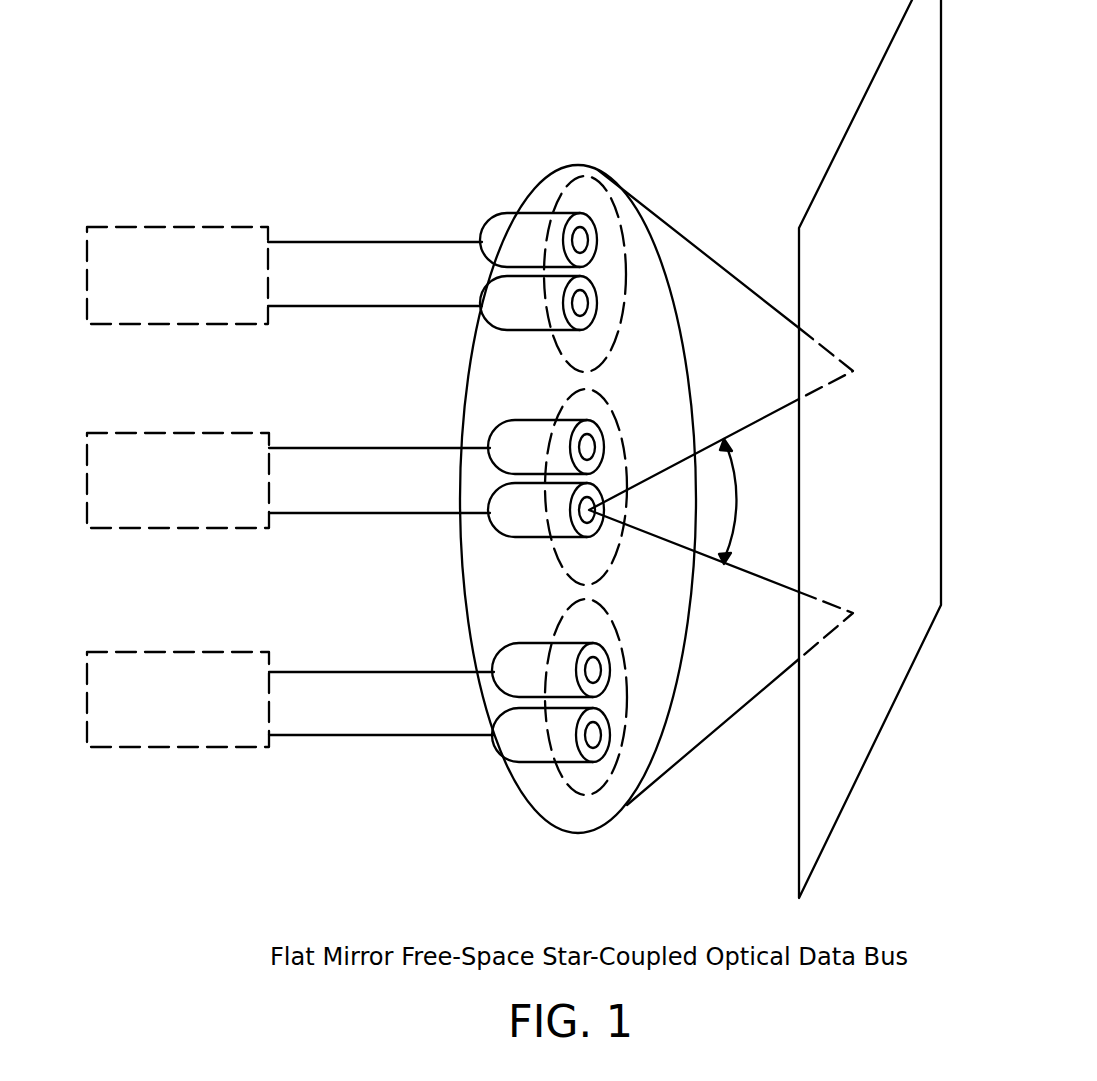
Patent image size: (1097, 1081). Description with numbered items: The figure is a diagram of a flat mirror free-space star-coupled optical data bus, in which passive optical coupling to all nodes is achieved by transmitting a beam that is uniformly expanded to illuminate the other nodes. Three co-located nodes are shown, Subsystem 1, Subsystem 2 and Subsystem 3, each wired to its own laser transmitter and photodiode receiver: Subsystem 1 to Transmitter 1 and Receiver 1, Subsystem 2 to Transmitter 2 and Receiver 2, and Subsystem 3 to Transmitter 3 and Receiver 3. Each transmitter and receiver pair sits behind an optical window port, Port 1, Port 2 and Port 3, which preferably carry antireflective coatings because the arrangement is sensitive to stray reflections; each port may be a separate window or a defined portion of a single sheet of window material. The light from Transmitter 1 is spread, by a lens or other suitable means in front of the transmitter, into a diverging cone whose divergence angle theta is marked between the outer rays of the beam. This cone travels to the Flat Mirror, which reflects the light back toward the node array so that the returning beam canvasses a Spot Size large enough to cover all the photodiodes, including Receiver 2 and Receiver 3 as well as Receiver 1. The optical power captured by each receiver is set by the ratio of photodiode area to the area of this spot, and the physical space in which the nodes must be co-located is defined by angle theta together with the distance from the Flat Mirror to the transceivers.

The flat mirror Flat Mirror is at (847, 125).
The spot size Spot Size is at (560, 835).
The port Port 1 is at (557, 557).
The port Port 2 is at (560, 185).
The port Port 3 is at (592, 793).
The receiver Receiver 1 is at (490, 437).
The receiver Receiver 2 is at (483, 232).
The receiver Receiver 3 is at (492, 660).
The transmitter Transmitter 1 is at (490, 500).
The transmitter Transmitter 2 is at (478, 330).
The transmitter Transmitter 3 is at (495, 706).
The subsystem Subsystem 1 is at (288, 480).
The subsystem Subsystem 2 is at (284, 275).
The subsystem Subsystem 3 is at (290, 699).
The angle theta is at (766, 498).